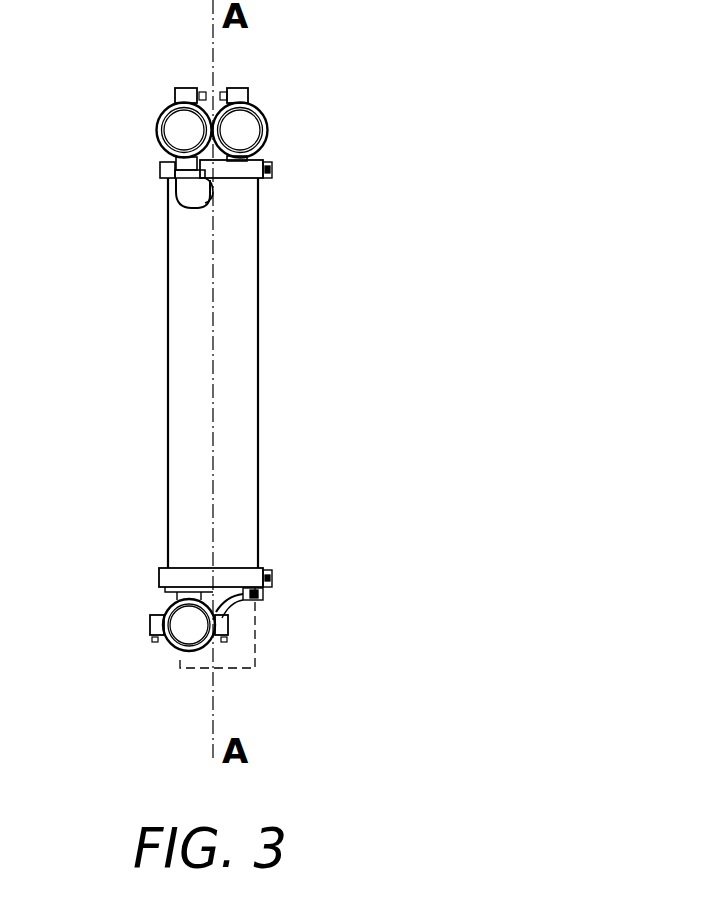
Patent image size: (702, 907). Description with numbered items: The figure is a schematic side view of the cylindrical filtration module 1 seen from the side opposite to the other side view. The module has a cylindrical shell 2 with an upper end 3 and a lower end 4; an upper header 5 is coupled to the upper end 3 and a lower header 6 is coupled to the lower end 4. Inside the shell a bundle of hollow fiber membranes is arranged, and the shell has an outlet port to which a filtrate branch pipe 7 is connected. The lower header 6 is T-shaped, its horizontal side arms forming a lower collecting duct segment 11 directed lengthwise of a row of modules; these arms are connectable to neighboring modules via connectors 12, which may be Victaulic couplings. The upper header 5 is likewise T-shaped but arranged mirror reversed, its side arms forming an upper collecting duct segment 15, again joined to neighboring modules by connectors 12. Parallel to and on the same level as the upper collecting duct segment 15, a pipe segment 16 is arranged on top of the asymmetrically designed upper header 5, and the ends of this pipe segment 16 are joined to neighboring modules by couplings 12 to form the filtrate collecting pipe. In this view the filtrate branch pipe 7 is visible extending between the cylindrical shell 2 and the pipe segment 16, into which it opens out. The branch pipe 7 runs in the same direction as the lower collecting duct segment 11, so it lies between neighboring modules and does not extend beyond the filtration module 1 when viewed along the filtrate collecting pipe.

The cylindrical filtration module 1 is at (407, 313).
The cylindrical shell 2 is at (258, 367).
The upper end 3 is at (258, 180).
The lower end 4 is at (258, 567).
The upper header 5 is at (262, 156).
The lower header 6 is at (167, 597).
The filtrate branch pipe 7 is at (192, 198).
The lower collecting duct segment 11 is at (192, 633).
The connectors 12 is at (177, 97).
The upper collecting duct segment 15 is at (245, 128).
The pipe segment 16 is at (178, 133).